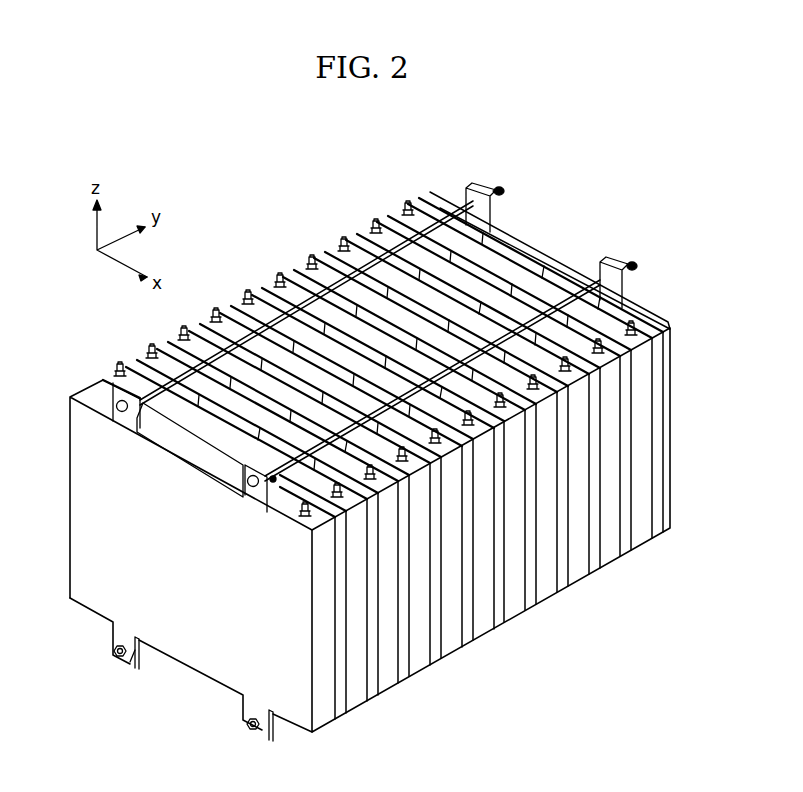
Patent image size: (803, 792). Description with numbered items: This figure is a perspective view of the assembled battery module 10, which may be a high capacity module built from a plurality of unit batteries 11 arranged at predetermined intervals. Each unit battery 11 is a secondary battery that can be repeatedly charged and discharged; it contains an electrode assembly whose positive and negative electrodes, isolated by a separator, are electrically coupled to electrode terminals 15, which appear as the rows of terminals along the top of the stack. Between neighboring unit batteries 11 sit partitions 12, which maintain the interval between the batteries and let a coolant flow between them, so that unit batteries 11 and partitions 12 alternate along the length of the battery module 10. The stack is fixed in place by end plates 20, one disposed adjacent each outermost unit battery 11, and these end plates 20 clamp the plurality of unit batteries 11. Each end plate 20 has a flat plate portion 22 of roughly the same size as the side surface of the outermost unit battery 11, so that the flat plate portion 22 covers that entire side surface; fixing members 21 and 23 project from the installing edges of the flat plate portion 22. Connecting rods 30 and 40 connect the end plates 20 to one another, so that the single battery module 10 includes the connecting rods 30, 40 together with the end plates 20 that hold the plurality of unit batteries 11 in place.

The battery module 10 is at (239, 278).
The unit battery 11 is at (640, 543).
The partition 12 is at (660, 530).
The electrode terminal 15 is at (412, 203).
The end plate 20 is at (532, 256).
The fixing member 21 is at (467, 187).
The flat plate portion 22 is at (210, 667).
The fixing member 23 is at (110, 640).
The connecting rod 30 is at (370, 250).
The connecting rod 40 is at (150, 655).